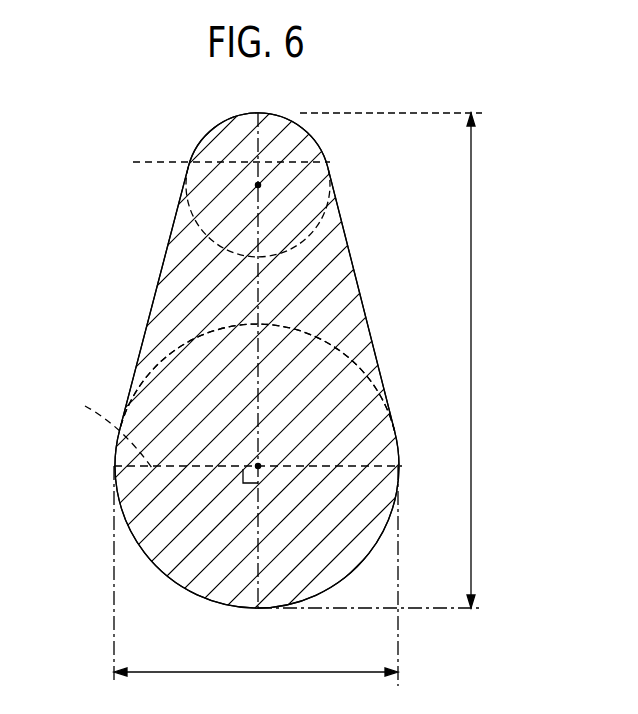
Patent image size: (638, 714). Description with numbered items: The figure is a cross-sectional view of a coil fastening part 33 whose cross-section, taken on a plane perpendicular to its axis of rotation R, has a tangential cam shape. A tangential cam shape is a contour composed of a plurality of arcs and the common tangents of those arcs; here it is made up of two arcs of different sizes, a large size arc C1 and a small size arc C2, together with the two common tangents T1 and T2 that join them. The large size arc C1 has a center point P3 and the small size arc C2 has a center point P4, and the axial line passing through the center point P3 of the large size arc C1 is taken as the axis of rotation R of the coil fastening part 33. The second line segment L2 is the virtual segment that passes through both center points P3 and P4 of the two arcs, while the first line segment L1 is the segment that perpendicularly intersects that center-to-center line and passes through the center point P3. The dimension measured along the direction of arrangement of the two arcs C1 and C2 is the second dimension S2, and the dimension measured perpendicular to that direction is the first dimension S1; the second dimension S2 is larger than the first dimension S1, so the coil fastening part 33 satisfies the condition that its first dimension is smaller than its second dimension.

The coil fastening part 33 is at (172, 220).
The large size arc C1 is at (158, 578).
The small size arc C2 is at (202, 141).
The common tangent T1 is at (162, 273).
The common tangent T2 is at (351, 257).
The first line segment L1 is at (103, 428).
The second line segment L2 is at (215, 164).
The center point of the large size arc P3 is at (368, 325).
The center point of the small size arc P4 is at (260, 184).
The axis of rotation R is at (257, 377).
The first dimension S1 is at (256, 586).
The second dimension S2 is at (383, 360).